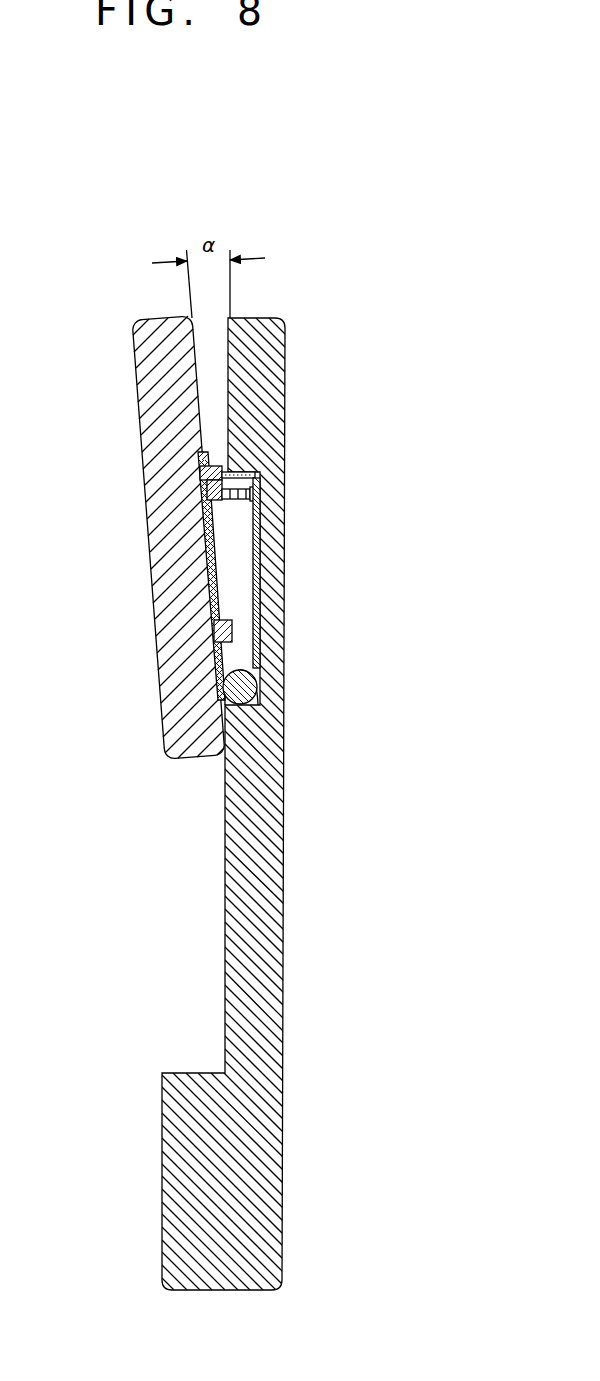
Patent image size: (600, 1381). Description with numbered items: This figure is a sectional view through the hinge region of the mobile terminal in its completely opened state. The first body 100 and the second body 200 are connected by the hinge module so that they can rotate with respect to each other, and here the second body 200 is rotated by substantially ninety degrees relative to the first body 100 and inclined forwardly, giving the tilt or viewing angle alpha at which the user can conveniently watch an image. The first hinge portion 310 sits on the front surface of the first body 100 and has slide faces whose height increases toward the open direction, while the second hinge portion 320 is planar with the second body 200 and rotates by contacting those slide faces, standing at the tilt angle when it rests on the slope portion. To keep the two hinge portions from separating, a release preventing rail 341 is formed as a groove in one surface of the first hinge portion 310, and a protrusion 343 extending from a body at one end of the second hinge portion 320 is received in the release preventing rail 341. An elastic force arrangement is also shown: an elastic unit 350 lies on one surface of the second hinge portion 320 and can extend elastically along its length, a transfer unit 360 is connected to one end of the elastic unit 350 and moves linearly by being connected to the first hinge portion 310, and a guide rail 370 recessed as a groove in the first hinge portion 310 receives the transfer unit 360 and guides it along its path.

The first body 100 is at (181, 1170).
The second body 200 is at (172, 722).
The first hinge portion 310 is at (256, 477).
The second hinge portion 320 is at (218, 630).
The release preventing rail 341 is at (222, 467).
The protrusion 343 is at (222, 476).
The elastic unit 350 is at (232, 556).
The transfer unit 360 is at (245, 506).
The guide rail 370 is at (258, 493).